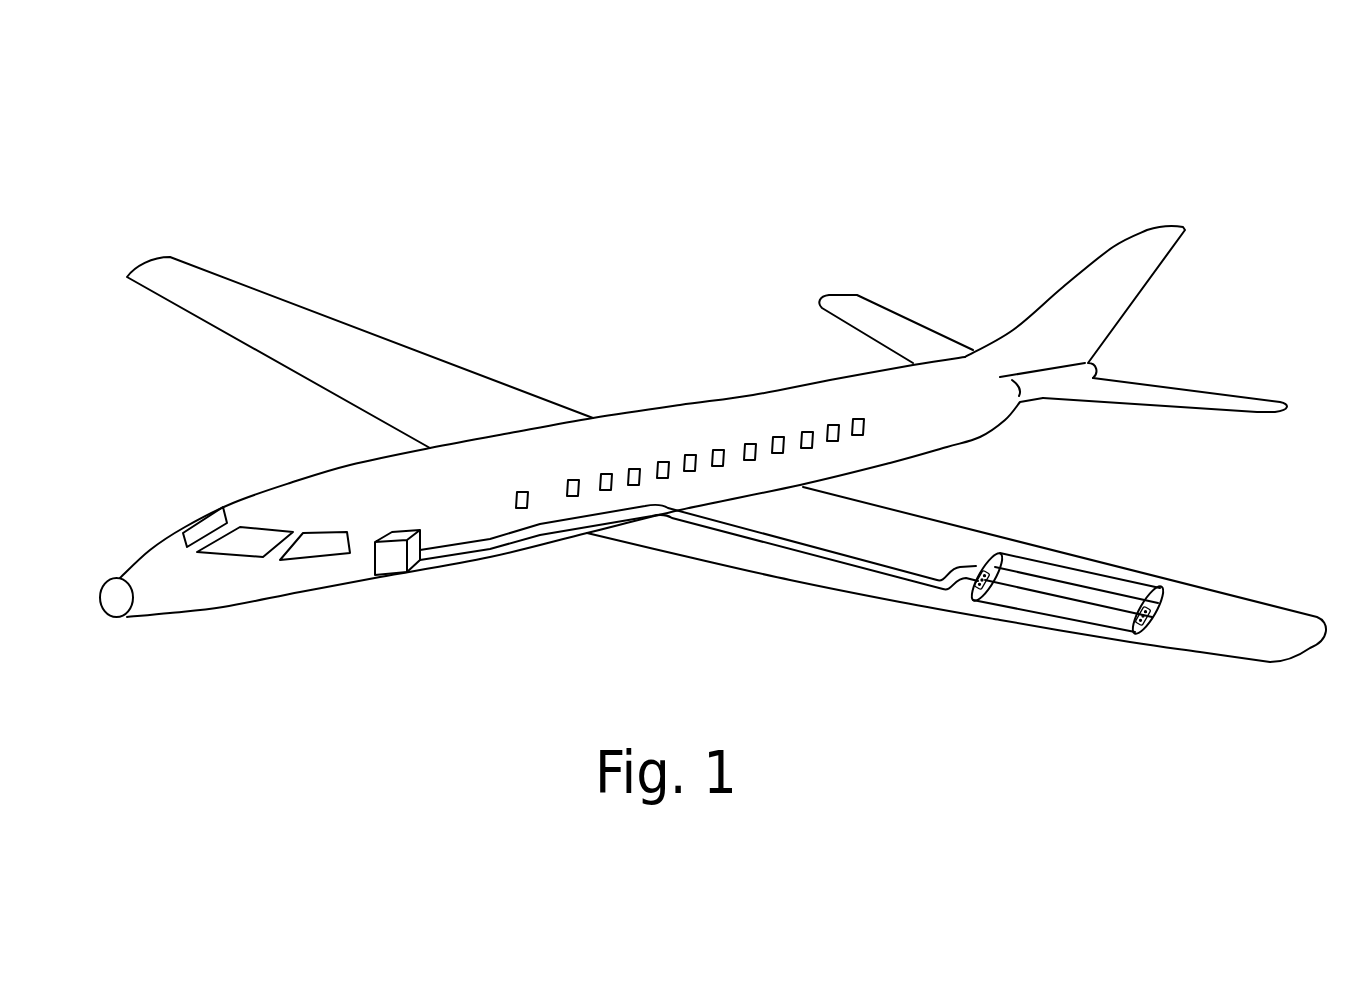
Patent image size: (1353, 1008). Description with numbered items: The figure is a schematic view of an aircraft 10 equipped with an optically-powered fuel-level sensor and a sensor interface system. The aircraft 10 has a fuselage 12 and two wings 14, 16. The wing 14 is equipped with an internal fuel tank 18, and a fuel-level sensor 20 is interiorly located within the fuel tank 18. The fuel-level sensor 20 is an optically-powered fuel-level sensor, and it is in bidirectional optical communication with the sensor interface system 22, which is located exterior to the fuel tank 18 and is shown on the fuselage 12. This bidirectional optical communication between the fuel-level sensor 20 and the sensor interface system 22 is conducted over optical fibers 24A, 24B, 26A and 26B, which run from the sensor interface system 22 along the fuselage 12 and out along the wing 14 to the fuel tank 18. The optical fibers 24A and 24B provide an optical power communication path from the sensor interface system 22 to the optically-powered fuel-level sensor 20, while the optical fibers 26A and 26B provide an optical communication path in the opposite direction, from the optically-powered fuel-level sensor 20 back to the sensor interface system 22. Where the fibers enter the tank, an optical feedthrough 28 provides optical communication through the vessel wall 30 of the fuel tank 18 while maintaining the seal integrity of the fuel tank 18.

The aircraft 10 is at (799, 214).
The fuselage 12 is at (325, 504).
The wing 14 is at (818, 527).
The wing 16 is at (373, 394).
The internal fuel tank 18 is at (1117, 588).
The fuel-level sensor 20 is at (1142, 631).
The sensor interface system 22 is at (394, 566).
The optical fiber 24A is at (467, 541).
The optical fiber 24B is at (1047, 585).
The optical fiber 26A is at (495, 553).
The optical fiber 26B is at (1020, 586).
The optical feedthrough 28 is at (974, 561).
The vessel wall 30 is at (988, 566).